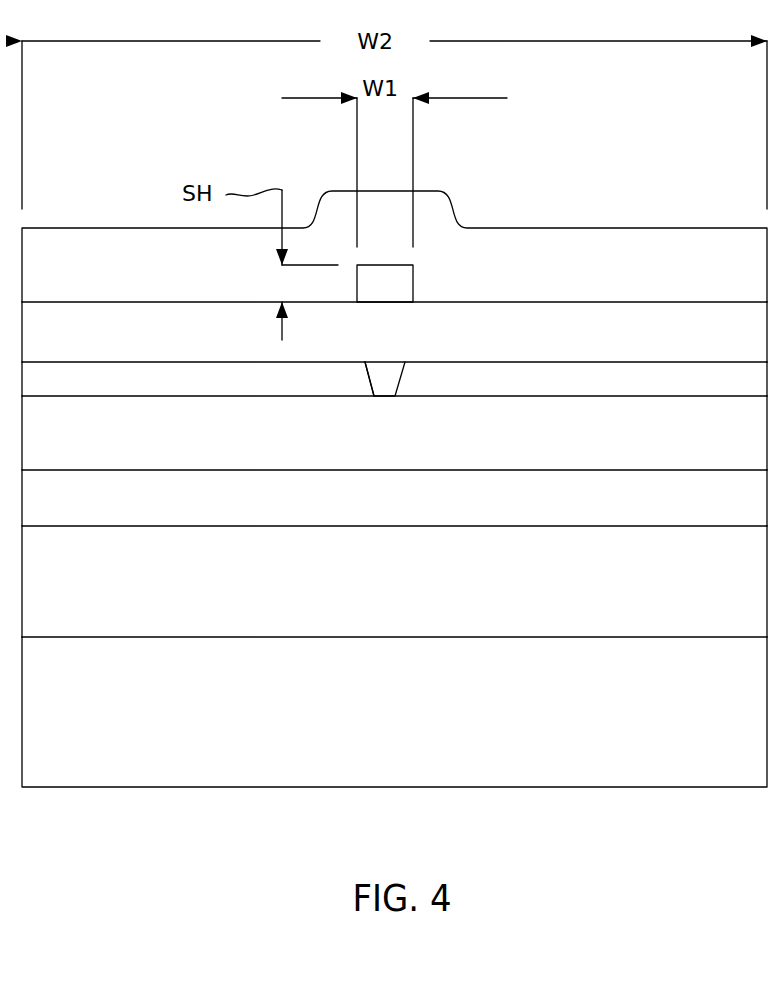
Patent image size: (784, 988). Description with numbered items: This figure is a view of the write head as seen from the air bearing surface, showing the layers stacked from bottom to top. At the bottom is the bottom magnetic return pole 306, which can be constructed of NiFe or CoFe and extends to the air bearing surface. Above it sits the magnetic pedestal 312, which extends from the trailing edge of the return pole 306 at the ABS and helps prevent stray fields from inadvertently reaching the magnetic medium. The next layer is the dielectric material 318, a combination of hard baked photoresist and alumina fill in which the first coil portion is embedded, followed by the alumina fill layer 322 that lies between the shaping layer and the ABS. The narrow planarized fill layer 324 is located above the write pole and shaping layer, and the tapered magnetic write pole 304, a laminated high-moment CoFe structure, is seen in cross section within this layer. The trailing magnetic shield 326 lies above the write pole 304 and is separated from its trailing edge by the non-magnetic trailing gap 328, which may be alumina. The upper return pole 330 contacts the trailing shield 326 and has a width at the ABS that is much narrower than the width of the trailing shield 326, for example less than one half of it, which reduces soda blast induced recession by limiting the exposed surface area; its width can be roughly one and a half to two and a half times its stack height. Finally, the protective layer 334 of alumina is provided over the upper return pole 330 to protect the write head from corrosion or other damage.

The magnetic write pole 304 is at (385, 380).
The bottom magnetic return pole 306 is at (444, 710).
The magnetic pedestal 312 is at (444, 580).
The dielectric material 318 is at (442, 495).
The alumina fill layer 322 is at (442, 432).
The planarized fill layer 324 is at (168, 377).
The trailing magnetic shield 326 is at (431, 337).
The trailing gap 328 is at (363, 364).
The upper return pole 330 is at (398, 283).
The protective layer 334 is at (639, 273).